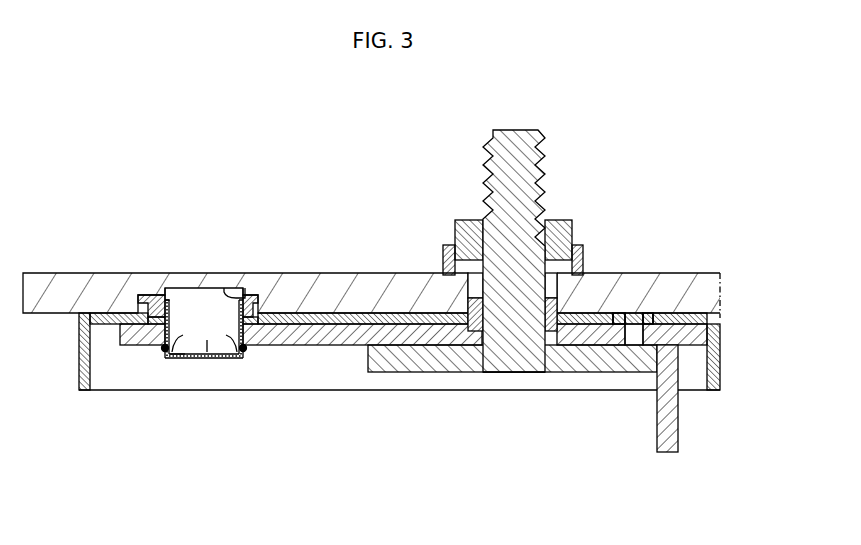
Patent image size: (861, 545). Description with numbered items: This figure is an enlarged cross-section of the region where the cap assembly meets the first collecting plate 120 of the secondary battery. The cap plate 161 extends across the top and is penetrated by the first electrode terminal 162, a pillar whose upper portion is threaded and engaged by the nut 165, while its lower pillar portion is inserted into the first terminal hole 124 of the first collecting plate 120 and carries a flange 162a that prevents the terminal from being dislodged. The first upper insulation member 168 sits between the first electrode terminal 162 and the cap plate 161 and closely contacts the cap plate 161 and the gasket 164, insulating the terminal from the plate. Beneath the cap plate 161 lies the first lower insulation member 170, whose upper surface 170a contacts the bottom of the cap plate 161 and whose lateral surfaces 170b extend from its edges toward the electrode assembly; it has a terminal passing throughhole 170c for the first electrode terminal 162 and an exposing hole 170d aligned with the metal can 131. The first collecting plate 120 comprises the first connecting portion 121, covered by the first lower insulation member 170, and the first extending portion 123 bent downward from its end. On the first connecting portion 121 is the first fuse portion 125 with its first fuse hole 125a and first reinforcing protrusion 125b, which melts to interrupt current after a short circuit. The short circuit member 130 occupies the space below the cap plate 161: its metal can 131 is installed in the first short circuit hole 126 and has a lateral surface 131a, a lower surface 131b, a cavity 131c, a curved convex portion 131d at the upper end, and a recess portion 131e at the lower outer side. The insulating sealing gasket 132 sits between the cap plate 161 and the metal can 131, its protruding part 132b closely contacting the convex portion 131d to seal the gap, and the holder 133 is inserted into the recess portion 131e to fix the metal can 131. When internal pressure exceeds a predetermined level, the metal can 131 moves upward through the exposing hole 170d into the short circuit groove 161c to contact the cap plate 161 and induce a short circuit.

The first collecting plate 120 is at (683, 370).
The first connecting portion 121 is at (600, 337).
The first extending portion 123 is at (675, 422).
The first terminal hole 124 is at (492, 335).
The first fuse portion 125 is at (678, 250).
The first fuse hole 125a is at (633, 332).
The first reinforcing protrusion 125b is at (648, 317).
The first short circuit hole 126 is at (247, 350).
The short circuit member 130 is at (228, 264).
The metal can 131 is at (183, 406).
The lateral surface 131a is at (192, 355).
The lower surface 131b is at (207, 340).
The cavity 131c is at (230, 352).
The convex portion 131d is at (165, 350).
The recess portion 131e is at (178, 357).
The sealing gasket 132 is at (148, 290).
The protruding part 132b is at (180, 295).
The holder 133 is at (288, 397).
The cap plate 161 is at (45, 282).
The short circuit groove 161c is at (248, 288).
The first electrode terminal 162 is at (472, 265).
The flange 162a is at (420, 360).
The gasket 164 is at (470, 302).
The nut 165 is at (556, 228).
The first upper insulation member 168 is at (444, 245).
The first lower insulation member 170 is at (449, 361).
The upper surface 170a is at (693, 317).
The lateral surfaces 170b is at (722, 335).
The terminal passing throughhole 170c is at (553, 332).
The exposing hole 170d is at (263, 335).